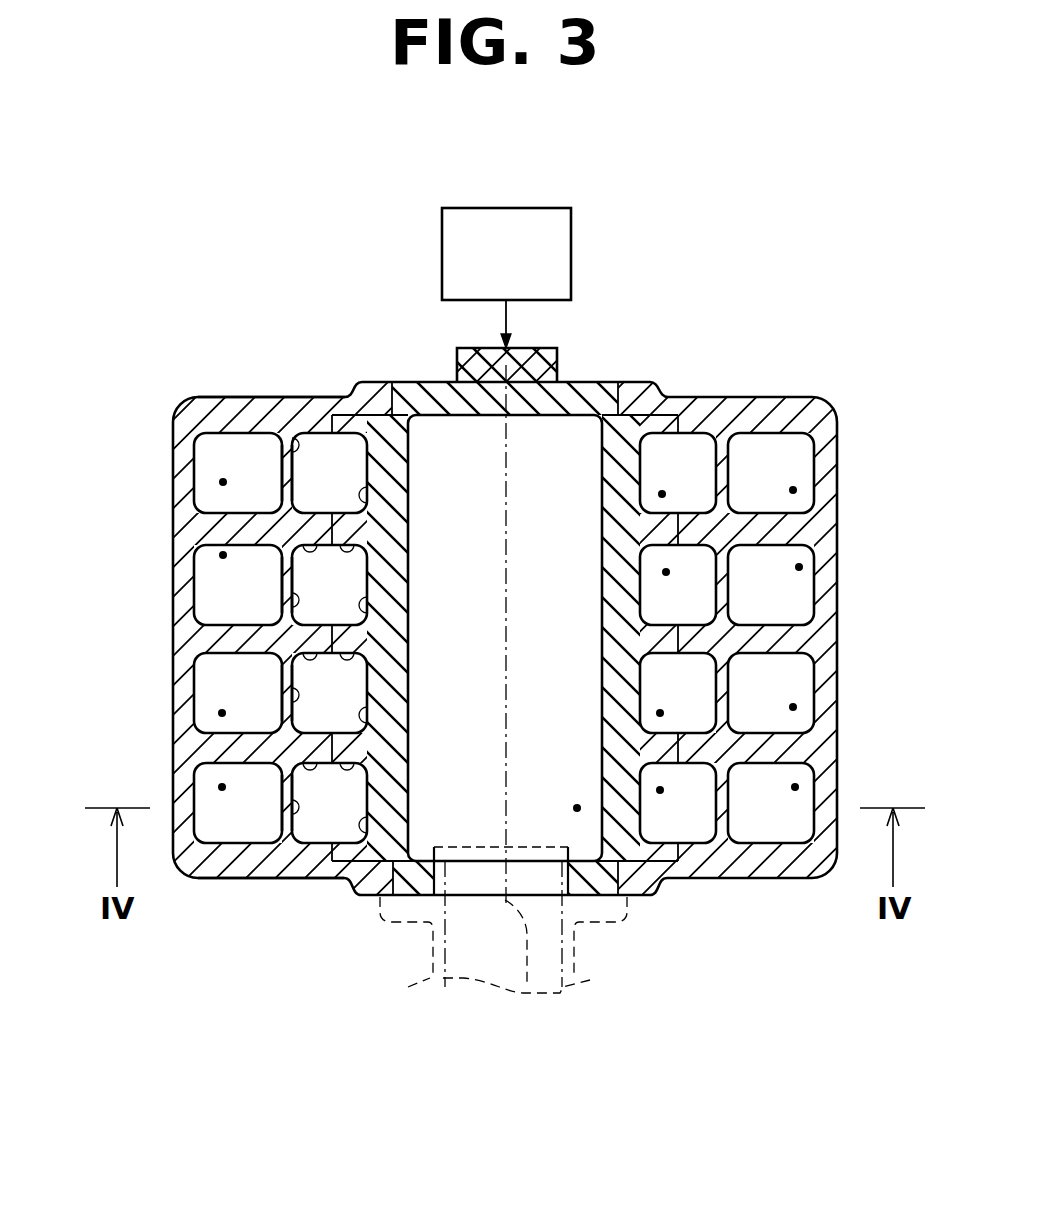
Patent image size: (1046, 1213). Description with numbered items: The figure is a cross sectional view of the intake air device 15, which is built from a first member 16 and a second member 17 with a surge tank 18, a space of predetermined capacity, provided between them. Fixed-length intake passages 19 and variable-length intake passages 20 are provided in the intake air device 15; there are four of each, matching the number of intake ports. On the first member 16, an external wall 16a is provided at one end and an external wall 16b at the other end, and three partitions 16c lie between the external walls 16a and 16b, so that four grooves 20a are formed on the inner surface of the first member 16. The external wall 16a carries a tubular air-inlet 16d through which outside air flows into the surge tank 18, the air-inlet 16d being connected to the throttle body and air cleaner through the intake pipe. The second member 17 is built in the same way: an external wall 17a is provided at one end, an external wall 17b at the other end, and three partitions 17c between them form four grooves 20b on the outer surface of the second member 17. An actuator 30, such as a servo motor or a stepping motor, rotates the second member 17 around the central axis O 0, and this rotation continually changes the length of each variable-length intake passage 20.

The central axis 0 is at (527, 990).
The intake air device 15 is at (672, 364).
The first member 16 is at (742, 396).
The external wall 16a is at (298, 866).
The external wall 16b is at (300, 405).
The partitions 16c is at (300, 575).
The air-inlet 16d is at (577, 943).
The second member 17 is at (601, 379).
The external wall 17a is at (343, 860).
The external wall 17b is at (350, 413).
The partitions 17c is at (347, 548).
The surge tank 18 is at (606, 808).
The fixed-length intake passages 19 is at (223, 555).
The variable-length intake passages 20 is at (666, 572).
The grooves 20a is at (298, 434).
The grooves 20b is at (362, 499).
The actuator 30 is at (508, 208).